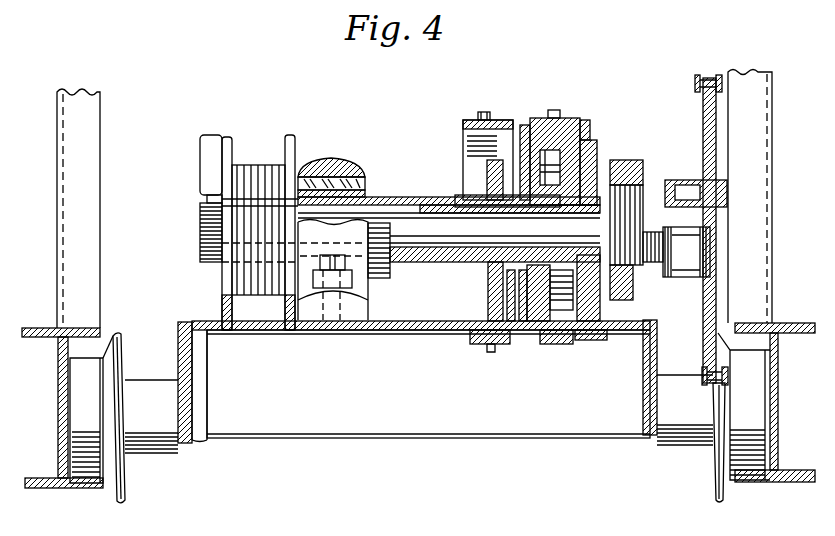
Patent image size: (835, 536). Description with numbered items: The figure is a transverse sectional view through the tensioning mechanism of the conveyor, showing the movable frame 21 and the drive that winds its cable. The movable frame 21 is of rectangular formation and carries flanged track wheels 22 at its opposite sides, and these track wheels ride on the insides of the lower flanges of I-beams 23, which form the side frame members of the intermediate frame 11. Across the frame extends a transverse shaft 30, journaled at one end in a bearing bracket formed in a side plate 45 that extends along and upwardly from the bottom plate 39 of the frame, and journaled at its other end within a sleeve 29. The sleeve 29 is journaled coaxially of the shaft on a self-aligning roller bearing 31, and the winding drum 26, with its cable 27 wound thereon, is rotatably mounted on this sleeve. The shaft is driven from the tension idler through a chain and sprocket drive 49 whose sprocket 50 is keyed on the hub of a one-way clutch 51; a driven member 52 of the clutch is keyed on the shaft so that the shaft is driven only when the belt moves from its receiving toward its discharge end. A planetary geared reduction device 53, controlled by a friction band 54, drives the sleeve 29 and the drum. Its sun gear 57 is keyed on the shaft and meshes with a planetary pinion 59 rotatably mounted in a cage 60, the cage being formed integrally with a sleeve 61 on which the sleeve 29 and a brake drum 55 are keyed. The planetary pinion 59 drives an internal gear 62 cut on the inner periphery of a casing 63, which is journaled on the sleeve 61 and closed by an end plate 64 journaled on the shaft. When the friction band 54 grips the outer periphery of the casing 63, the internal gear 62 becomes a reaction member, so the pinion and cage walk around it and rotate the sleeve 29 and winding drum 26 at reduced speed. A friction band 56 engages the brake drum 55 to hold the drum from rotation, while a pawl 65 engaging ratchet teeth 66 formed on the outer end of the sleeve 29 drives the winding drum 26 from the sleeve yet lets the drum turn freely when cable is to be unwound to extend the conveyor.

The intermediate frame 11 is at (55, 396).
The movable frame 21 is at (472, 443).
The flanged track wheels 22 is at (118, 500).
The I-beams 23 is at (80, 488).
The winding drum 26 is at (292, 143).
The cable 27 is at (260, 165).
The sleeve 29 is at (386, 278).
The transverse shaft 30 is at (405, 205).
The self-aligning roller bearing 31 is at (352, 168).
The bottom plate 39 is at (437, 330).
The side plate 45 is at (642, 290).
The chain and sprocket drive 49 is at (705, 75).
The sprocket 50 is at (703, 118).
The one-way clutch 51 is at (690, 180).
The driven member 52 is at (686, 278).
The planetary geared reduction device 53 is at (585, 123).
The friction band 54 is at (554, 118).
The brake drum 55 is at (463, 144).
The friction band 56 is at (484, 114).
The sun gear 57 is at (616, 165).
The planetary pinion 59 is at (597, 145).
The cage 60 is at (525, 125).
The sleeve 61 is at (457, 262).
The internal gear 62 is at (550, 340).
The casing 63 is at (492, 345).
The end plate 64 is at (596, 338).
The pawl 65 is at (205, 195).
The ratchet teeth 66 is at (208, 262).